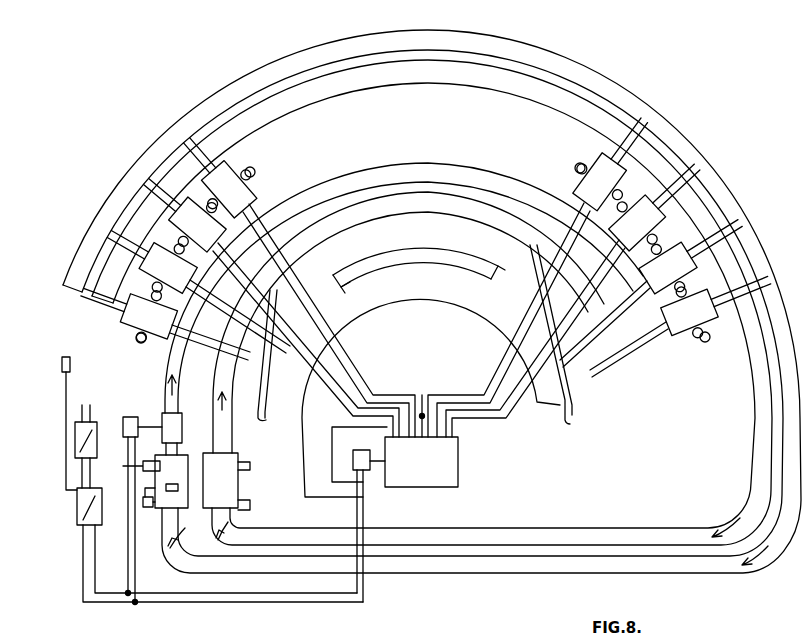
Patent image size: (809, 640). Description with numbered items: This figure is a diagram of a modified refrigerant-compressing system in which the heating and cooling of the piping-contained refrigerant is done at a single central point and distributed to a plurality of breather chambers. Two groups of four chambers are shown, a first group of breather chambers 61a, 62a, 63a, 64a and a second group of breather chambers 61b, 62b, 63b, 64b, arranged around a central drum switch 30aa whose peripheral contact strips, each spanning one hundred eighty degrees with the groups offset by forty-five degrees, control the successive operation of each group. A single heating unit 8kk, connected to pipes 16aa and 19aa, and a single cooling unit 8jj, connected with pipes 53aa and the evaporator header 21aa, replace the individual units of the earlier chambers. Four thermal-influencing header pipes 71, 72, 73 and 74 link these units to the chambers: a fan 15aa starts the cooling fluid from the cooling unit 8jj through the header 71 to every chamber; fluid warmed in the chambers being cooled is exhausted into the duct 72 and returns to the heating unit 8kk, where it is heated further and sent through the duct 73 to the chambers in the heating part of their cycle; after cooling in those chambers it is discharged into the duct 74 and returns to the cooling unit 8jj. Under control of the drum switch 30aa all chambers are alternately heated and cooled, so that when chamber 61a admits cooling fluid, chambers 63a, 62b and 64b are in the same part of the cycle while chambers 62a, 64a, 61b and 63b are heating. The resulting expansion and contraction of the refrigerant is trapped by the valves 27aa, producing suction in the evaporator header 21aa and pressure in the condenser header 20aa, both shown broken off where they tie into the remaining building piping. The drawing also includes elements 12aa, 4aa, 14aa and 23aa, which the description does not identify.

The header pipe 74 is at (70, 276).
The header pipe 72 is at (92, 300).
The header pipe 71 is at (163, 378).
The header pipe 73 is at (213, 402).
The evaporator header 21aa is at (258, 414).
The condenser header 20aa is at (572, 424).
The breather chamber 61a is at (127, 309).
The breather chamber 62a is at (150, 257).
The breather chamber 63a is at (181, 211).
The breather chamber 64a is at (216, 174).
The breather chamber 61b is at (614, 160).
The breather chamber 62b is at (657, 203).
The breather chamber 63b is at (693, 252).
The breather chamber 64b is at (717, 301).
The valve 27aa is at (137, 340).
The switch 12aa is at (70, 363).
The switch unit 4aa is at (98, 430).
The switch unit 14aa is at (77, 516).
The fan 15aa is at (135, 412).
The cooling unit 8jj is at (166, 481).
The pipes 53aa is at (133, 508).
The heating unit 8kk is at (220, 480).
The pipe 16aa is at (250, 466).
The pipe 19aa is at (250, 505).
The sensor unit 23aa is at (359, 514).
The drum switch 30aa is at (421, 441).